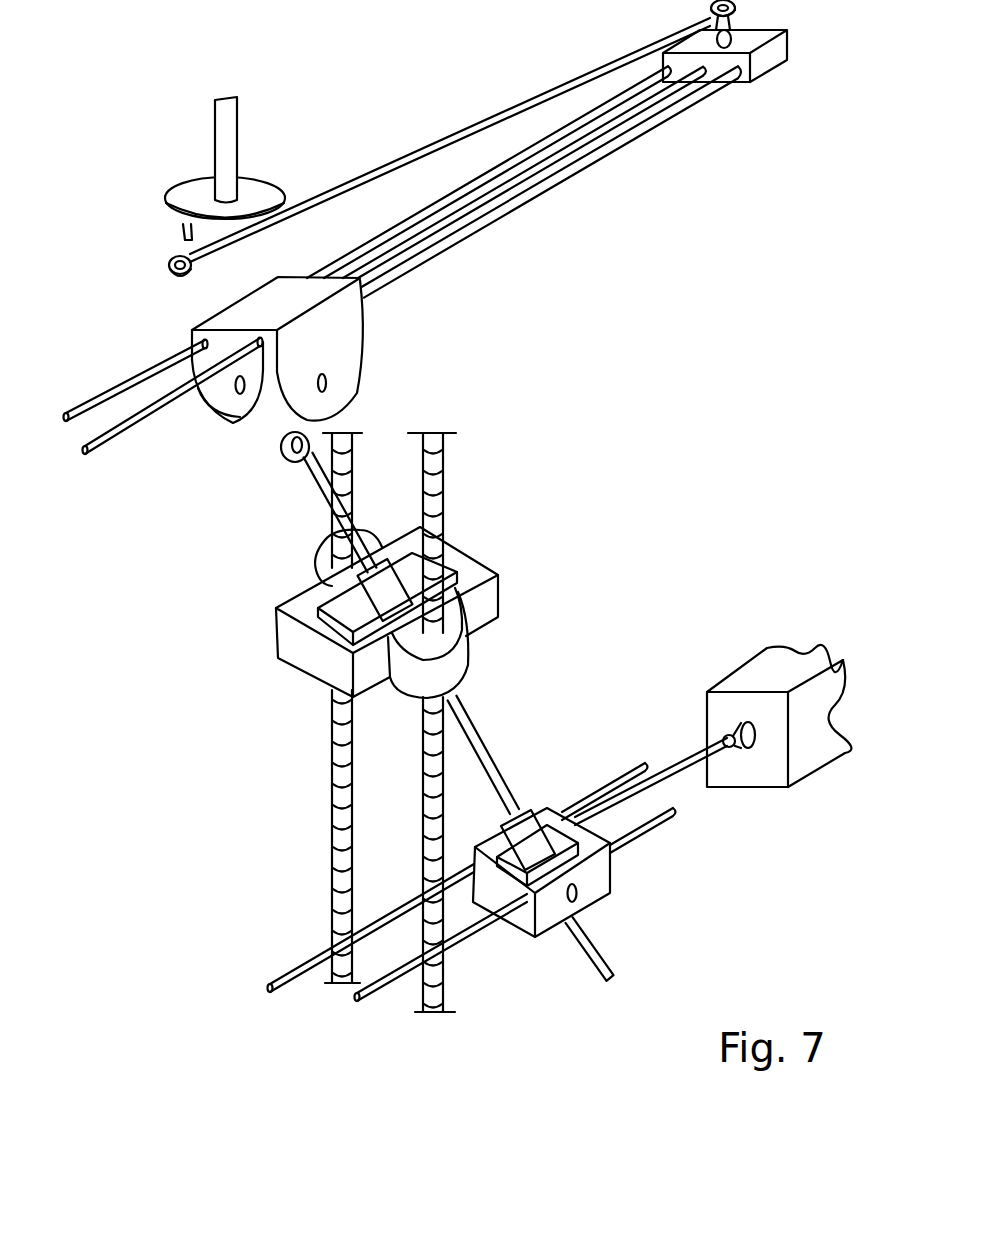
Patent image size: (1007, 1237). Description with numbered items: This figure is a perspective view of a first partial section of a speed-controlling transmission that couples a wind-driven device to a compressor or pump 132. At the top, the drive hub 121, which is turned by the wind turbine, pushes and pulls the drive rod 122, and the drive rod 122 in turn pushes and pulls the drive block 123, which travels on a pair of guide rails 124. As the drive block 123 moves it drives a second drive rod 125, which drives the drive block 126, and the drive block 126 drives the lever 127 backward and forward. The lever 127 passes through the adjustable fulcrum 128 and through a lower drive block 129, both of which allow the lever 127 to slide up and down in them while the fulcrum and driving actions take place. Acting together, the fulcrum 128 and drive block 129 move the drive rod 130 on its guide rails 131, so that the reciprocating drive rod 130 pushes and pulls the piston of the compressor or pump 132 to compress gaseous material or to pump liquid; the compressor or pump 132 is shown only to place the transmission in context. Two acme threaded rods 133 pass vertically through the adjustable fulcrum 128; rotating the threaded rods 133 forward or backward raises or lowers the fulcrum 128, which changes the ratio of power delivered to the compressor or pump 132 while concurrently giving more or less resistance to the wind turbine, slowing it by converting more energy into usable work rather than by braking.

The drive hub 121 is at (285, 187).
The drive rod 122 is at (565, 82).
The drive block 123 is at (777, 66).
The guide rails 124 is at (162, 397).
The drive rod 125 is at (568, 152).
The drive block 126 is at (372, 338).
The lever 127 is at (315, 488).
The adjustable fulcrum 128 is at (500, 597).
The drive block 129 is at (613, 877).
The drive rod 130 is at (683, 762).
The guide rails 131 is at (357, 998).
The compressor or pump 132 is at (768, 658).
The acme threaded rods 133 is at (422, 752).